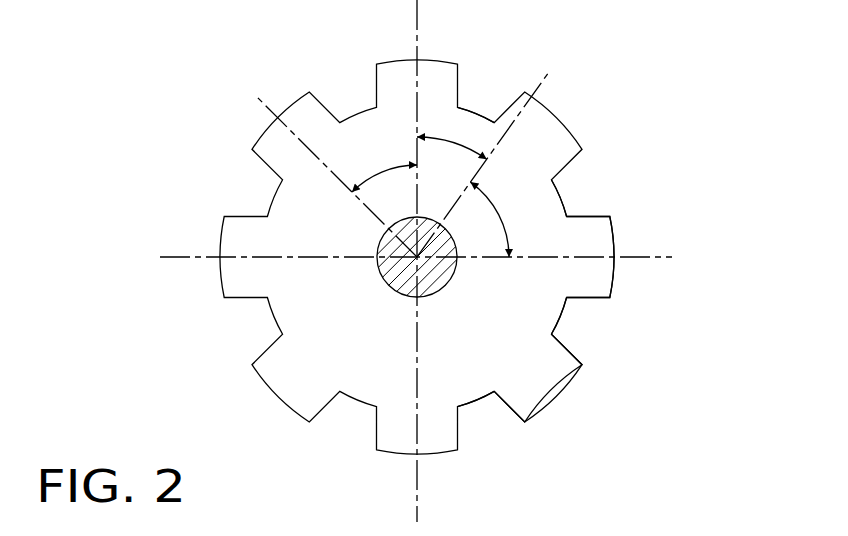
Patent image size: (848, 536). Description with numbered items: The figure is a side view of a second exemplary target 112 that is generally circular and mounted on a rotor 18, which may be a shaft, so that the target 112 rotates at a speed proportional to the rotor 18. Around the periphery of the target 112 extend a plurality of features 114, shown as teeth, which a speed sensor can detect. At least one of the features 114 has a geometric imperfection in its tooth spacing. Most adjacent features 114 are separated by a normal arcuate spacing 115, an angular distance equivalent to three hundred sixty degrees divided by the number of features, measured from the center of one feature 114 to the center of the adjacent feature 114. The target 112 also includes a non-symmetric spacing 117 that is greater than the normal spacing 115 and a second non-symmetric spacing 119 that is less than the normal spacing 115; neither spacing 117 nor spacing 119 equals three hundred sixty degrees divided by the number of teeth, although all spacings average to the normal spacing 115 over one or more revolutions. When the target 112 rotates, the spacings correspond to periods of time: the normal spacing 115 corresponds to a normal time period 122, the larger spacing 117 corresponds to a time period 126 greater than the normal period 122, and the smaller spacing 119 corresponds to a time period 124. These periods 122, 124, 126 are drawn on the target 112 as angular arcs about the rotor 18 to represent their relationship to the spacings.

The target 112 is at (595, 78).
The features 114 is at (623, 247).
The arcuate spacing 115 is at (600, 332).
The non-symmetric spacing 117 is at (587, 177).
The second non-symmetric spacing 119 is at (478, 77).
The rotor 18 is at (438, 289).
The normal time period 122 is at (389, 168).
The time period 124 is at (449, 149).
The time period 126 is at (499, 208).